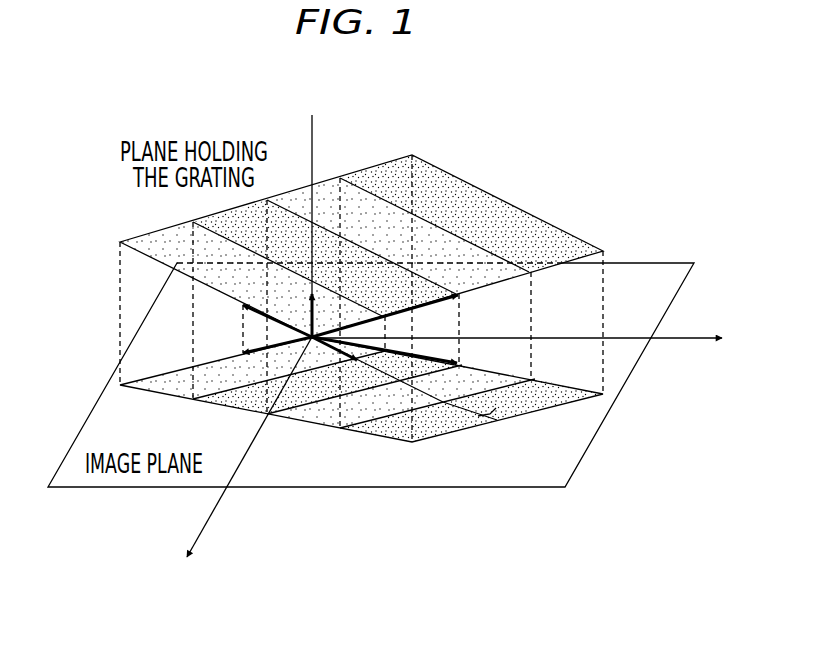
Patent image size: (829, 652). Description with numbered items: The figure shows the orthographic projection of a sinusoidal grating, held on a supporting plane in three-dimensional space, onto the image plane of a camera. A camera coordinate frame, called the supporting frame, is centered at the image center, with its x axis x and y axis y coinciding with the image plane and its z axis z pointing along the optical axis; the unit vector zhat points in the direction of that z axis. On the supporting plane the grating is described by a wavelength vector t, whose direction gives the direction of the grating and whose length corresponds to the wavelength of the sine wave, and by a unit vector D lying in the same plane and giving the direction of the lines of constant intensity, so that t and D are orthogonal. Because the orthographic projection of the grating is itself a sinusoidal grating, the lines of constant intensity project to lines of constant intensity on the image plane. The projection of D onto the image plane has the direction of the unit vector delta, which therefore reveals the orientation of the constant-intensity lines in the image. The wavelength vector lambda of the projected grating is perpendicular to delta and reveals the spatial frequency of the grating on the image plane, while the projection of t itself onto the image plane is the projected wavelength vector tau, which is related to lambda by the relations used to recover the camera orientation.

The x axis x is at (241, 464).
The y axis y is at (528, 343).
The z axis z is at (308, 210).
The unit vector Z zhat is at (304, 306).
The unit vector D is at (274, 304).
The wavelength vector t is at (391, 315).
The projected wavelength vector τ tau is at (395, 352).
The unit vector δ delta is at (297, 362).
The wavelength vector α lambda is at (404, 378).